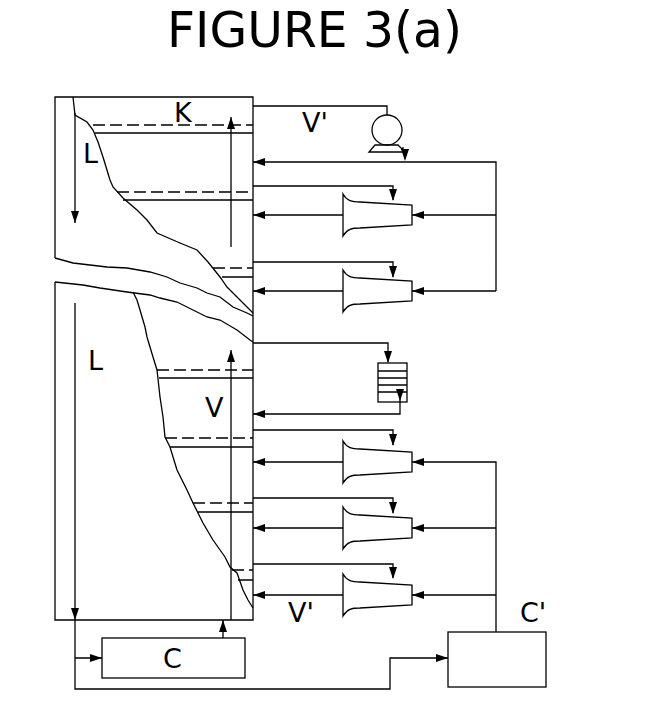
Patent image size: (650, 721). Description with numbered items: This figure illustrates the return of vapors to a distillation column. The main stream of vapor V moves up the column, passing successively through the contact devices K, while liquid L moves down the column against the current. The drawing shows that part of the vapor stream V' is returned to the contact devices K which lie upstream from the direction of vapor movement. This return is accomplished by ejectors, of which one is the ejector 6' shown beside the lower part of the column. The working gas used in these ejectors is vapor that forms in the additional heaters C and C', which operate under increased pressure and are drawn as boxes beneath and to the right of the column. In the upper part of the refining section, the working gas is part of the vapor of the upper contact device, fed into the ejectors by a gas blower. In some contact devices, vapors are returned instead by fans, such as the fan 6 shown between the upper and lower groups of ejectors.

The fan 6 is at (433, 364).
The ejector 6' is at (417, 449).